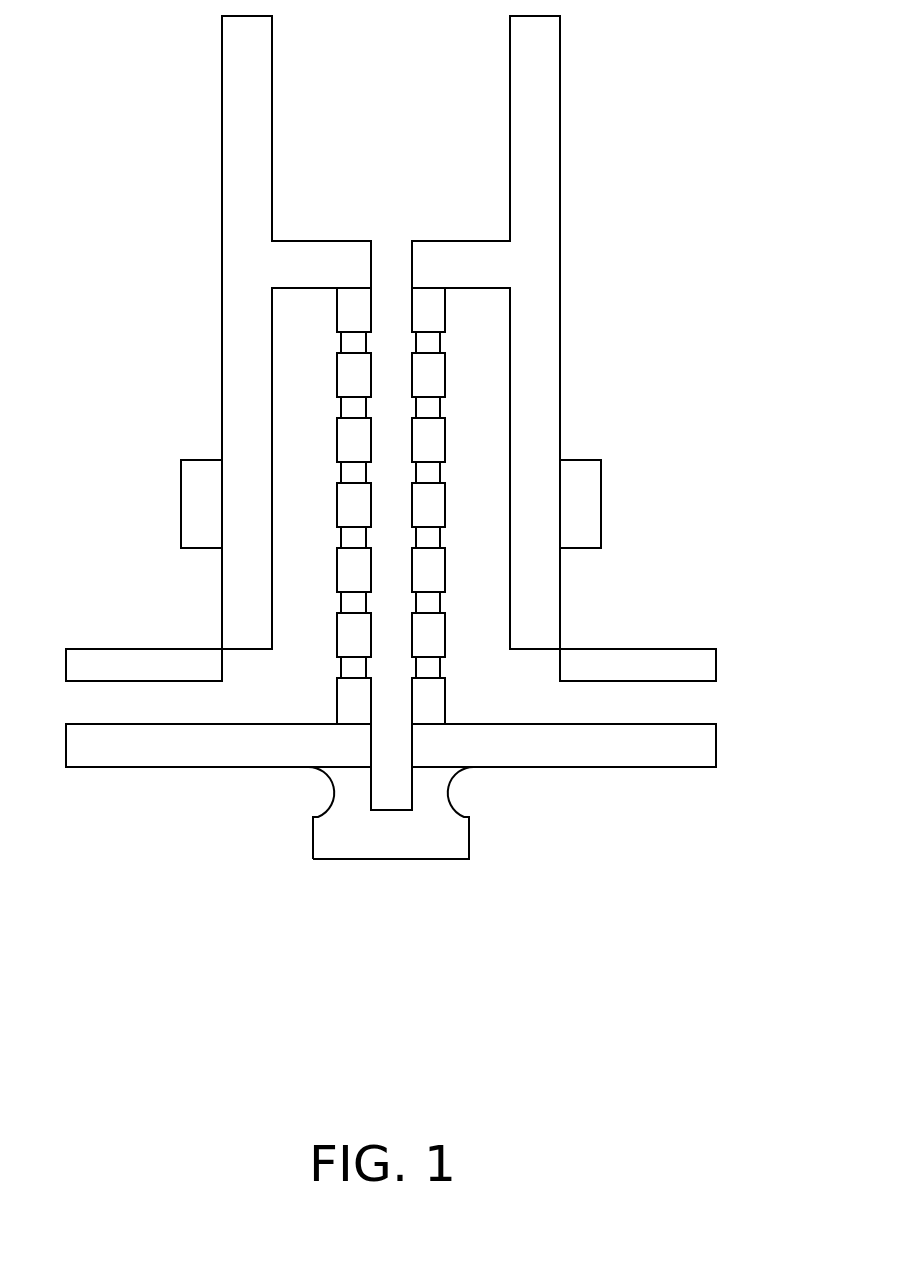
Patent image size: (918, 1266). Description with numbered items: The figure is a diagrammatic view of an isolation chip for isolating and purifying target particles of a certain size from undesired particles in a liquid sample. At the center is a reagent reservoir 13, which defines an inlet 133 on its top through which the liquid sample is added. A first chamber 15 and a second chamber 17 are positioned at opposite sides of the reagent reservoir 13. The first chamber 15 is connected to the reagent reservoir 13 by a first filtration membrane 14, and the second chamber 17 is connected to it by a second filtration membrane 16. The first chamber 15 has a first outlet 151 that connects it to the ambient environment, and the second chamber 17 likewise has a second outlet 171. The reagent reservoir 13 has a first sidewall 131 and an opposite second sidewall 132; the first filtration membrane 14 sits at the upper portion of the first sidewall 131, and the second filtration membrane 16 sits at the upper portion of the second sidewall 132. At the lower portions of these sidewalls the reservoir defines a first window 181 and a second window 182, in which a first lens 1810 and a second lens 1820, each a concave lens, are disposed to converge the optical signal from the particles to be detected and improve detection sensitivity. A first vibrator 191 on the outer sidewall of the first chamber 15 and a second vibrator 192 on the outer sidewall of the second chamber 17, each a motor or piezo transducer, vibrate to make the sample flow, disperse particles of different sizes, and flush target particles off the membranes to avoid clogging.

The reagent reservoir 13 is at (385, 337).
The first sidewall 131 is at (371, 741).
The second sidewall 132 is at (412, 741).
The inlet 133 is at (428, 142).
The first filtration membrane 14 is at (345, 513).
The first chamber 15 is at (296, 392).
The first outlet 151 is at (142, 692).
The second filtration membrane 16 is at (430, 510).
The second chamber 17 is at (467, 367).
The second outlet 171 is at (610, 694).
The first window 181 is at (330, 785).
The first lens 1810 is at (352, 786).
The second window 182 is at (452, 785).
The second lens 1820 is at (432, 786).
The first vibrator 191 is at (202, 500).
The second vibrator 192 is at (581, 520).